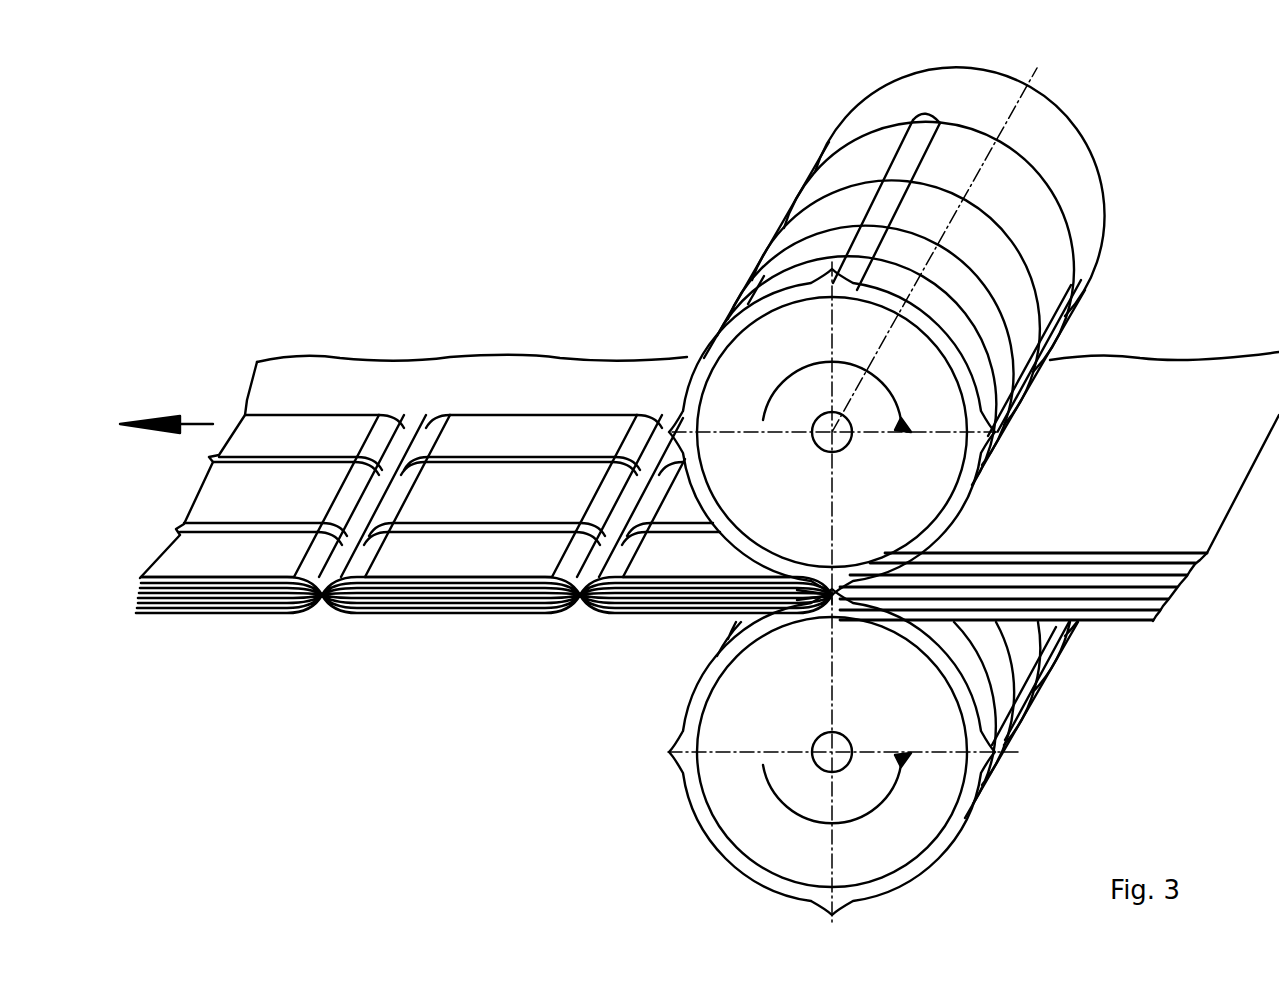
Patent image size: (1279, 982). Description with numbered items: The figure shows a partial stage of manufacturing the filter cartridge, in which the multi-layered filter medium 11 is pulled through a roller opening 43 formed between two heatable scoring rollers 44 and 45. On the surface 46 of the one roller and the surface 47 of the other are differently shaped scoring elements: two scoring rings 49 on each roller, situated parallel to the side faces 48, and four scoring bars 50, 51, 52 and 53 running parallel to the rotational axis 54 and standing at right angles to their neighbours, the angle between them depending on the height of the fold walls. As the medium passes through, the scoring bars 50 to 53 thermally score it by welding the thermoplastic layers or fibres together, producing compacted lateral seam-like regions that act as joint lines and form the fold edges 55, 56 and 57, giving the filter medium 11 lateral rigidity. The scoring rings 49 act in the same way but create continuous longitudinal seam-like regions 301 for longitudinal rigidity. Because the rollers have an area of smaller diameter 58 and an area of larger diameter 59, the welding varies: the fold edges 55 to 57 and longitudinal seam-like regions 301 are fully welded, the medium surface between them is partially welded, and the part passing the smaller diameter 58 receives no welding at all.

The multi-layered filter medium 11 is at (270, 376).
The longitudinal seam-like regions 301 is at (175, 535).
The roller opening 43 is at (843, 632).
The scoring roller 44 is at (1037, 103).
The scoring roller 45 is at (908, 862).
The surface of scoring roller 46 is at (1037, 203).
The surface of scoring roller 47 is at (1043, 683).
The side faces of scoring rollers 48 is at (720, 323).
The scoring rings 49 is at (757, 243).
The scoring bar 50 is at (900, 118).
The scoring bar 51 is at (1065, 283).
The scoring bar 52 is at (973, 670).
The scoring bar 53 is at (828, 430).
The rotational axis of scoring roller 54 is at (765, 345).
The fold edge 55 is at (323, 614).
The fold edge 56 is at (580, 614).
The fold edge 57 is at (818, 603).
The area of smaller diameter 58 is at (1090, 147).
The area of larger diameter 59 is at (1067, 225).